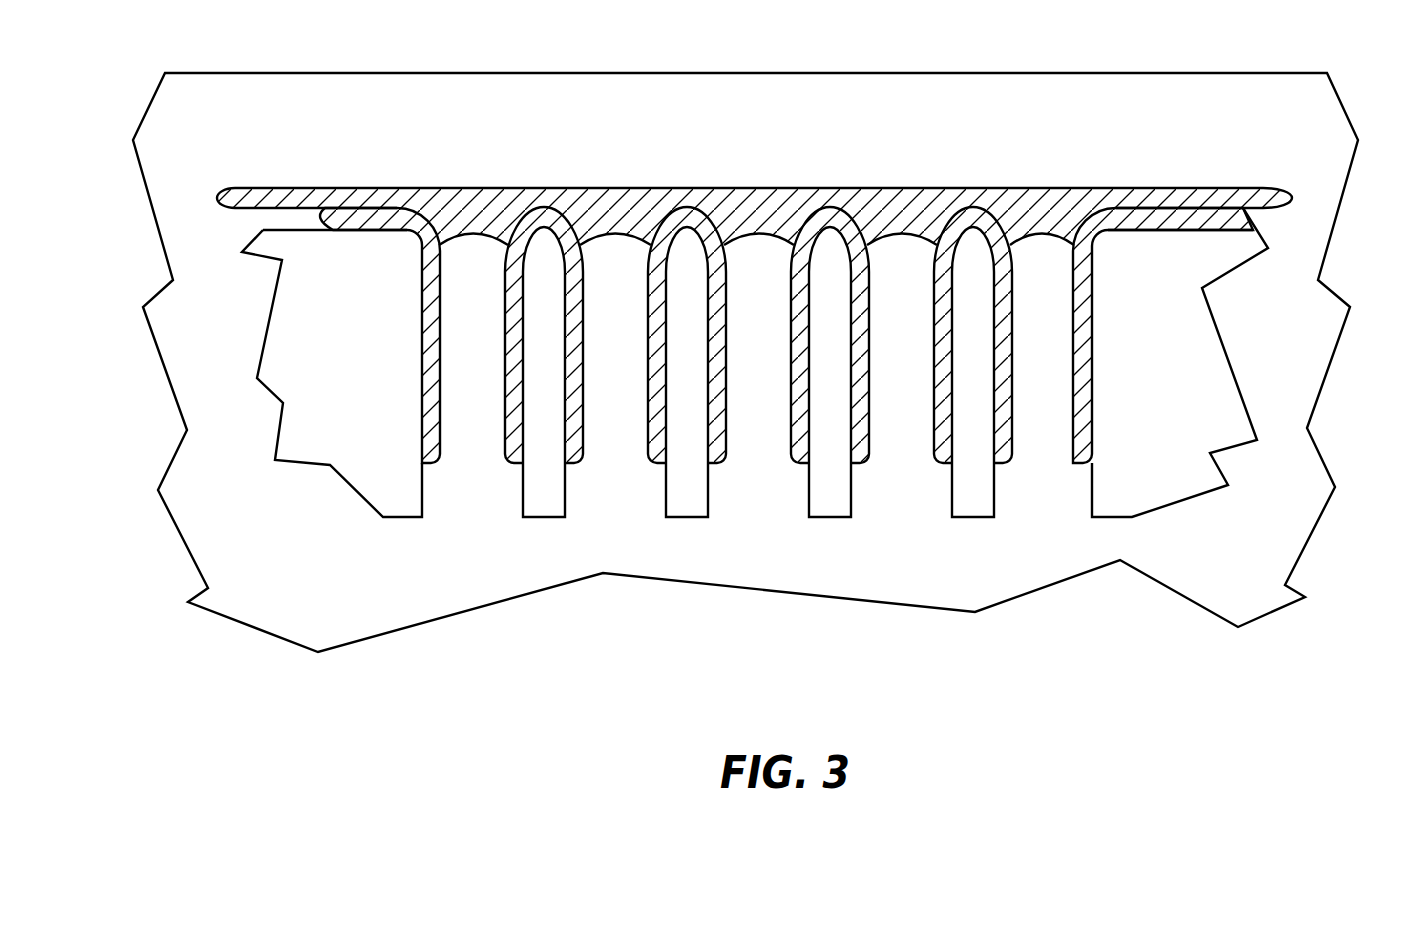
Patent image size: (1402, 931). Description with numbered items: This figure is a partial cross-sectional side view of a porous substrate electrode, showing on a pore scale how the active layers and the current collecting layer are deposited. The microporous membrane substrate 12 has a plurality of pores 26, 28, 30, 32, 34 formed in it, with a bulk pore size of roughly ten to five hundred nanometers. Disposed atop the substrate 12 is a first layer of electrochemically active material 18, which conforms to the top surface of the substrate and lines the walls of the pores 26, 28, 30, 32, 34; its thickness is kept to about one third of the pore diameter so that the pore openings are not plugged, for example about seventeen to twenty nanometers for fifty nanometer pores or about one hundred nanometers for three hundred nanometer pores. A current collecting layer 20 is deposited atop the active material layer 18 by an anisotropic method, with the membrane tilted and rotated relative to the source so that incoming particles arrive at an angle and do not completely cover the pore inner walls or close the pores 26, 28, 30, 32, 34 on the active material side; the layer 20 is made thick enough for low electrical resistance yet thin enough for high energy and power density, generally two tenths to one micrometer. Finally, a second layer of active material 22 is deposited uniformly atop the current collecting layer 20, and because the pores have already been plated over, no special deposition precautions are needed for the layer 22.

The microporous membrane substrate 12 is at (1205, 402).
The active material layer 18 is at (1187, 217).
The current collecting layer 20 is at (230, 202).
The second layer of active material 22 is at (1320, 138).
The pore 26 is at (473, 503).
The pore 28 is at (618, 503).
The pore 30 is at (759, 503).
The pore 32 is at (903, 503).
The pore 34 is at (1048, 503).